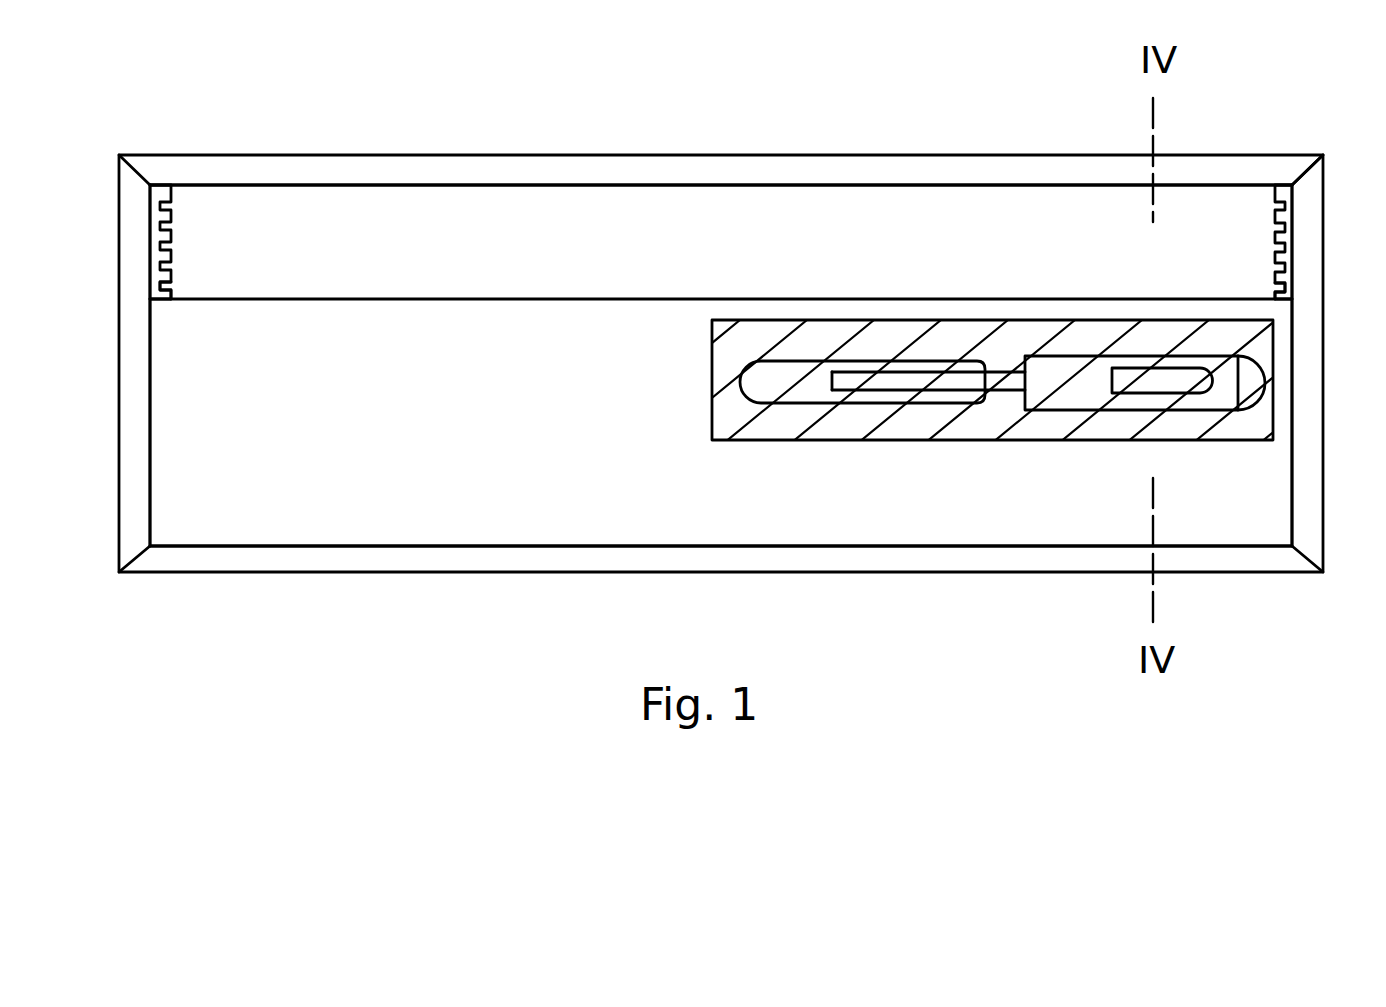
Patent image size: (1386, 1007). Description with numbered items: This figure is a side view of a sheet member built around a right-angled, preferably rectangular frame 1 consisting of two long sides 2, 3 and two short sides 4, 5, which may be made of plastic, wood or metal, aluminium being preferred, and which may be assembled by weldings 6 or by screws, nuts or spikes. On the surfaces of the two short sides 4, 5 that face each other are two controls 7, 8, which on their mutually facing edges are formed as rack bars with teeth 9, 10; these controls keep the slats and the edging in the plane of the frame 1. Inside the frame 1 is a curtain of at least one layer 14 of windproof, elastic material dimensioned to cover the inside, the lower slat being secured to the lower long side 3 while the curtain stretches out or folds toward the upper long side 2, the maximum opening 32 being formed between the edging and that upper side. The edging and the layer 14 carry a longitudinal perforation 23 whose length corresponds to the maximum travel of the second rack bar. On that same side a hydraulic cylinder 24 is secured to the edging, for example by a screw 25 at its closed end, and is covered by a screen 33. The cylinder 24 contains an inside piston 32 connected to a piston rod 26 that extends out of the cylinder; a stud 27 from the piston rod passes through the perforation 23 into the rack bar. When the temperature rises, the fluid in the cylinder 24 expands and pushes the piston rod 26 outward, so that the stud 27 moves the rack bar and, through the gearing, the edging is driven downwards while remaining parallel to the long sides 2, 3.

The frame 1 is at (1248, 130).
The long side 2 is at (507, 168).
The long side 3 is at (558, 563).
The short side 4 is at (128, 477).
The short side 5 is at (1310, 465).
The weldings 6 is at (1308, 172).
The control 7 is at (1290, 226).
The control 8 is at (166, 210).
The teeth 9 is at (1290, 277).
The teeth 10 is at (166, 278).
The layer 14 is at (423, 493).
The longitudinal perforation 23 is at (770, 388).
The hydraulic cylinder 24 is at (1083, 395).
The screw 25 is at (1253, 385).
The piston rod 26 is at (903, 382).
The stud 27 is at (843, 382).
The inside piston 32 is at (340, 200).
The screen 33 is at (843, 320).